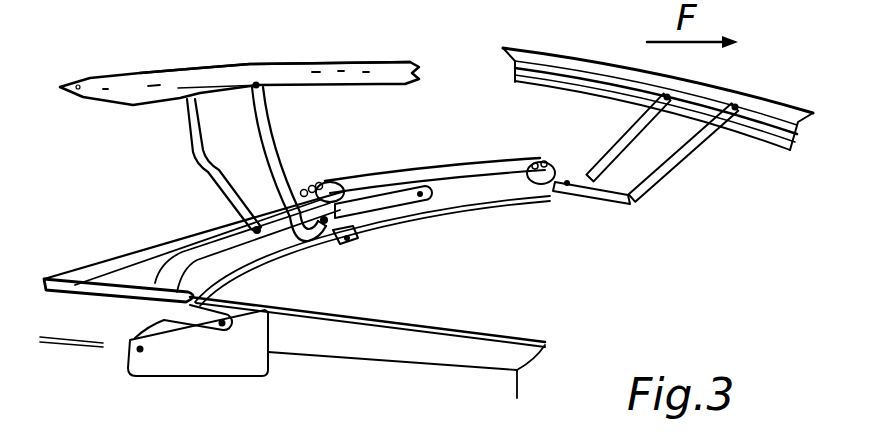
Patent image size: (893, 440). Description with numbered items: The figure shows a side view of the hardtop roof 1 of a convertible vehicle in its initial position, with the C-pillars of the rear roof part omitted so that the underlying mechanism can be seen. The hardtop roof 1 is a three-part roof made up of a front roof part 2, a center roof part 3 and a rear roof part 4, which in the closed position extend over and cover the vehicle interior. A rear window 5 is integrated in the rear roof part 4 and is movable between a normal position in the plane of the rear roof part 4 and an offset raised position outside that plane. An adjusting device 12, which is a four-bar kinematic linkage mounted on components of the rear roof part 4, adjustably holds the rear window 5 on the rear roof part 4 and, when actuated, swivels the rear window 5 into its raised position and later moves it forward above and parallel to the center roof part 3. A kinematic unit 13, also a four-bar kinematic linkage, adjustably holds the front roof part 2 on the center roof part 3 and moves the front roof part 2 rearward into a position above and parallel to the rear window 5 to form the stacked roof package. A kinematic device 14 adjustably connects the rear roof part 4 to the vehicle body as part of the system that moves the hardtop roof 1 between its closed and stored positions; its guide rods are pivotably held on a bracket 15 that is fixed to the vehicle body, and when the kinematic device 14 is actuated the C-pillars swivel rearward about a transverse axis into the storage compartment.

The hardtop roof 1 is at (309, 48).
The front roof part 2 is at (588, 61).
The center roof part 3 is at (445, 161).
The rear roof part 4 is at (120, 208).
The rear window 5 is at (155, 79).
The adjusting device 12 is at (188, 148).
The kinematic unit 13 is at (600, 140).
The kinematic device 14 is at (256, 273).
The bracket 15 is at (243, 365).